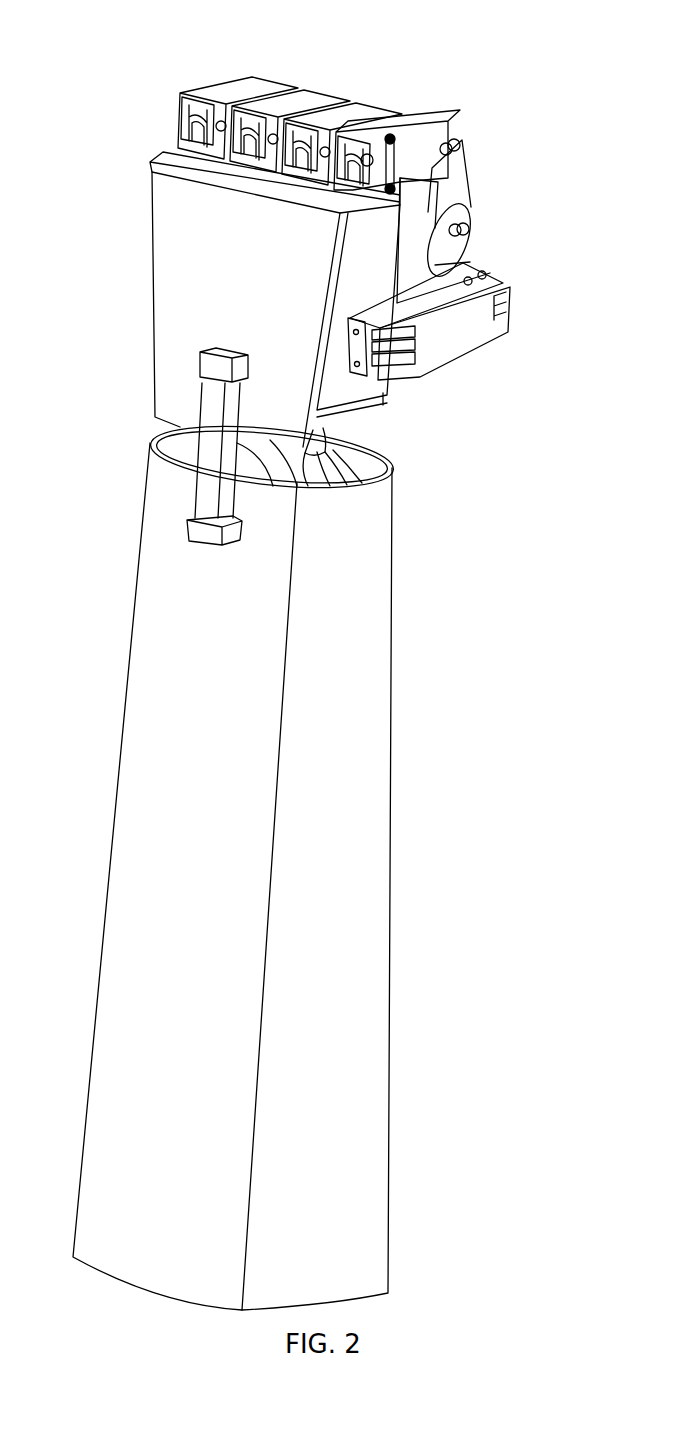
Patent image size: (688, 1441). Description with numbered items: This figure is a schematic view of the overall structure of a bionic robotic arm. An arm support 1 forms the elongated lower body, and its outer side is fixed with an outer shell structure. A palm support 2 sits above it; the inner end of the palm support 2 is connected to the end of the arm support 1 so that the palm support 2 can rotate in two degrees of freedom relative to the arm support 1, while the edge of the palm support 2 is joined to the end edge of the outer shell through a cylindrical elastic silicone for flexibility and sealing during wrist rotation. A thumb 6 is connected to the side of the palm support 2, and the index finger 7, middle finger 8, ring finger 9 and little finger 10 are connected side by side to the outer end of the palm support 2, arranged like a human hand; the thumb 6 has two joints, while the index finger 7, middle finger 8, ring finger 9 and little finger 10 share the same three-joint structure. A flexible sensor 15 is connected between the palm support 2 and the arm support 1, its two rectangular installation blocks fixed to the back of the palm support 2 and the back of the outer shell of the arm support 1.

The arm support 1 is at (313, 642).
The palm support 2 is at (198, 268).
The thumb 6 is at (443, 342).
The index finger 7 is at (458, 182).
The middle finger 8 is at (343, 118).
The ring finger 9 is at (290, 100).
The little finger 10 is at (248, 90).
The flexible sensor 15 is at (212, 493).